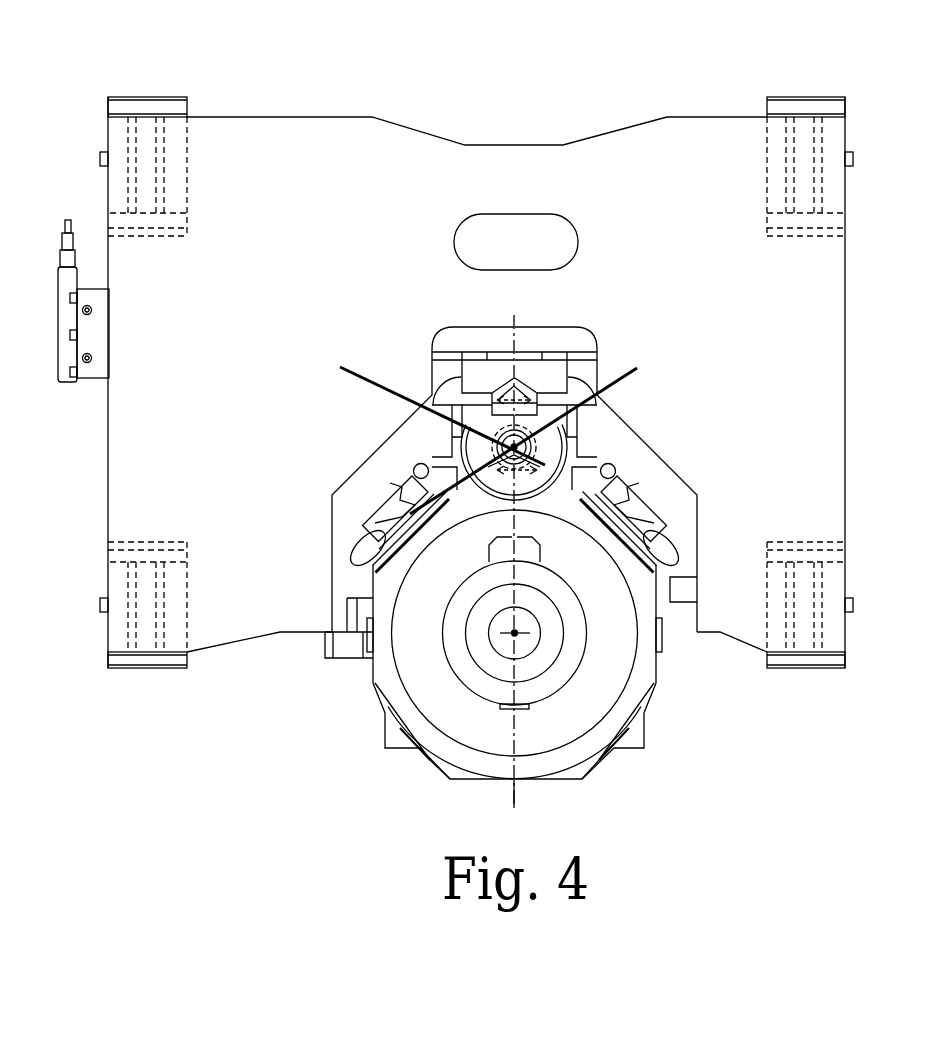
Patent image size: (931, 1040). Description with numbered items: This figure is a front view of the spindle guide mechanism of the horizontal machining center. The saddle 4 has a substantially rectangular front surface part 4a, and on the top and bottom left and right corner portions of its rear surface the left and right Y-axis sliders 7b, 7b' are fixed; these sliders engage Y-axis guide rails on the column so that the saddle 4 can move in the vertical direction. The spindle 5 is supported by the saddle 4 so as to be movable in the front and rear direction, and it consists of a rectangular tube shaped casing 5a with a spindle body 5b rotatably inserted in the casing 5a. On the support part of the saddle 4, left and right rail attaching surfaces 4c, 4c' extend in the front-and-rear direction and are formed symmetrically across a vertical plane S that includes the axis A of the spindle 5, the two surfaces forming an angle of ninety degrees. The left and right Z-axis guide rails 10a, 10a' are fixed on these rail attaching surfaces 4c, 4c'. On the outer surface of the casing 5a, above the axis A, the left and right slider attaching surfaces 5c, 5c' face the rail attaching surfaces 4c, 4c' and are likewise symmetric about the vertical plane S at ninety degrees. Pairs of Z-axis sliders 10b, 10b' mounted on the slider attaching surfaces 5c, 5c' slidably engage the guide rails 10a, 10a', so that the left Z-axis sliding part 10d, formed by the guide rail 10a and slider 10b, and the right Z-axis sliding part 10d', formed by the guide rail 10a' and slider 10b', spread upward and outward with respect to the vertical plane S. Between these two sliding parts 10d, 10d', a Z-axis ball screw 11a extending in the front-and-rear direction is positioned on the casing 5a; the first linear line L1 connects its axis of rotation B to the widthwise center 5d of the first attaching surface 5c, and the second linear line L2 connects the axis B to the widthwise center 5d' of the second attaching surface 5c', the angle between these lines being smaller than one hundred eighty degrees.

The saddle 4 is at (464, 127).
The front surface part 4a is at (607, 145).
The left rail attaching surface 4c is at (423, 479).
The right rail attaching surface 4c' is at (606, 479).
The spindle 5 is at (665, 667).
The casing 5a is at (636, 701).
The spindle body 5b is at (522, 655).
The left slider attaching surface 5c is at (329, 529).
The right slider attaching surface 5c' is at (704, 523).
The widthwise center of the first attaching surface 5d is at (355, 536).
The widthwise center of the second attaching surface 5d' is at (666, 536).
The left Y-axis slider 7b is at (150, 351).
The right Y-axis slider 7b' is at (810, 347).
The left Z-axis guide rail 10a is at (368, 479).
The right Z-axis guide rail 10a' is at (659, 480).
The left Z-axis slider 10b is at (356, 497).
The right Z-axis slider 10b' is at (674, 498).
The left Z-axis sliding part 10d is at (352, 482).
The right Z-axis sliding part 10d' is at (685, 486).
The Z-axis ball screw 11a is at (470, 418).
The axis of the spindle A is at (518, 632).
The axis of rotation of the ball screw B is at (560, 505).
The first linear line L1 is at (427, 410).
The second linear line L2 is at (540, 431).
The vertical plane S is at (516, 788).